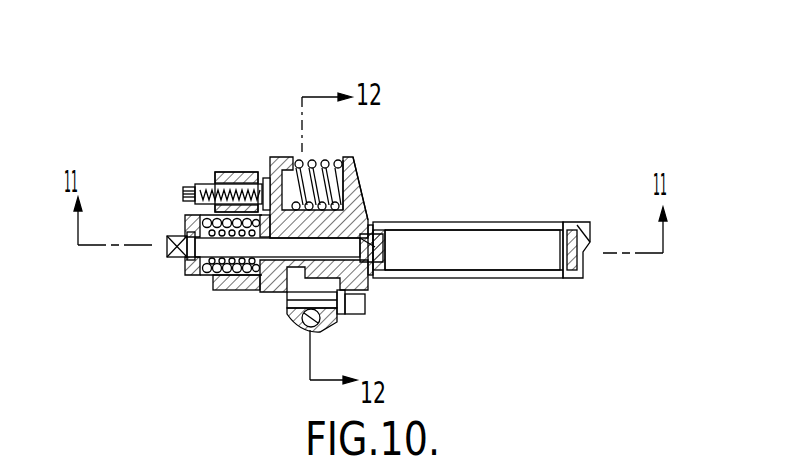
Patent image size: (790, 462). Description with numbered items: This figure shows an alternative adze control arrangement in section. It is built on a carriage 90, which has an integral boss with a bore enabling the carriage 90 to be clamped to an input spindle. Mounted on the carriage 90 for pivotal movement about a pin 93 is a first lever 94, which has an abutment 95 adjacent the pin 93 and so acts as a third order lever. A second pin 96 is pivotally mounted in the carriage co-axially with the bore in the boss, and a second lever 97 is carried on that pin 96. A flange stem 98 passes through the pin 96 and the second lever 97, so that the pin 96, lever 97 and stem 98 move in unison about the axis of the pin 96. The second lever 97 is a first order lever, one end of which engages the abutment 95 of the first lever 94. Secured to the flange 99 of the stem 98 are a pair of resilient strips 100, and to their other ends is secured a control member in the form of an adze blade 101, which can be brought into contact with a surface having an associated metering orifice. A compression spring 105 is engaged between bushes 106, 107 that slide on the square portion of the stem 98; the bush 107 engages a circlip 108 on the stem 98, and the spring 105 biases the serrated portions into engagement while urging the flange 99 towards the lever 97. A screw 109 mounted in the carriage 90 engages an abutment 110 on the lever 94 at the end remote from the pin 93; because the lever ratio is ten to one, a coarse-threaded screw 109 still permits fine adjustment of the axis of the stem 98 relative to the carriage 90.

The carriage 90 is at (268, 288).
The pin 93 is at (318, 326).
The first lever 94 is at (280, 285).
The abutment 95 is at (268, 288).
The pin 96 is at (346, 231).
The second lever 97 is at (349, 195).
The flange stem 98 is at (348, 252).
The flange 99 is at (365, 247).
The resilient strips 100 is at (497, 228).
The adze blade 101 is at (587, 232).
The compression spring 105 is at (200, 276).
The bush 106 is at (268, 196).
The bush 107 is at (188, 226).
The circlip 108 is at (172, 250).
The screw 109 is at (211, 180).
The abutment 110 is at (284, 190).